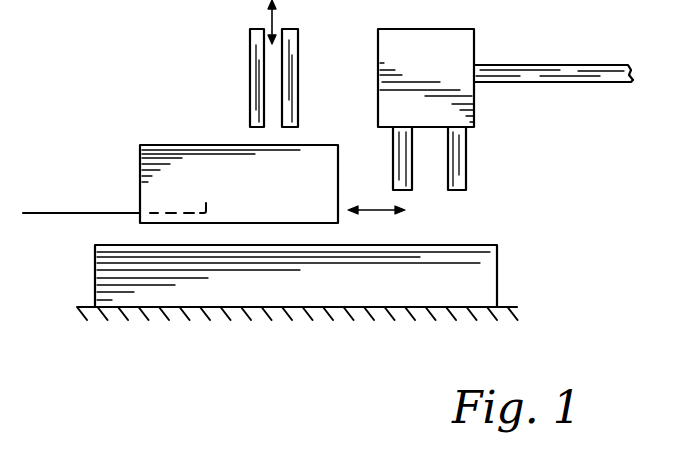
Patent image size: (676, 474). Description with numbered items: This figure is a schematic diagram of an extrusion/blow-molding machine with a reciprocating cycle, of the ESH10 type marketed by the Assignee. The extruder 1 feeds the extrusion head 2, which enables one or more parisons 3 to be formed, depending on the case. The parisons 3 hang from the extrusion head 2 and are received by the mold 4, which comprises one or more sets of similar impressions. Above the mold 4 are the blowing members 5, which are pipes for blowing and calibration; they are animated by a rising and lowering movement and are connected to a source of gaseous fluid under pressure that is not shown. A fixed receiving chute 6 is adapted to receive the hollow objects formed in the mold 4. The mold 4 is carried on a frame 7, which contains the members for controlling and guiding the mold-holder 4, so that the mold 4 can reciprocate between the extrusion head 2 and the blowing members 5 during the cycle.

The extruder 1 is at (561, 70).
The extrusion head 2 is at (462, 99).
The parisons 3 is at (457, 166).
The mold 4 is at (165, 157).
The blowing members 5 is at (251, 50).
The fixed receiving chute 6 is at (73, 213).
The frame 7 is at (117, 273).